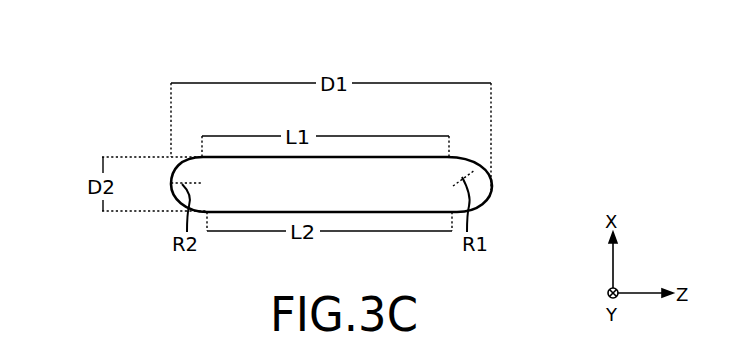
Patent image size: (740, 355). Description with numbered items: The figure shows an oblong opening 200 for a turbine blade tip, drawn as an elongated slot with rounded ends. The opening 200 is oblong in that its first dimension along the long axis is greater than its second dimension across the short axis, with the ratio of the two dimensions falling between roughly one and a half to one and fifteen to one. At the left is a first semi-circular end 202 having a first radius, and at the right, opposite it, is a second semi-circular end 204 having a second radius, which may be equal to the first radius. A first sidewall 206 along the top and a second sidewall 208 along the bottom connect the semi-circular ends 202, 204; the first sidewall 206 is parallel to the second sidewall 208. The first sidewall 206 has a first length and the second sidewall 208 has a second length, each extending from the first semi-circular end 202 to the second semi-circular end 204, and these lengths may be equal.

The opening 200 is at (130, 112).
The first semi-circular end 202 is at (173, 190).
The second semi-circular end 204 is at (492, 188).
The first sidewall 206 is at (360, 157).
The second sidewall 208 is at (383, 212).